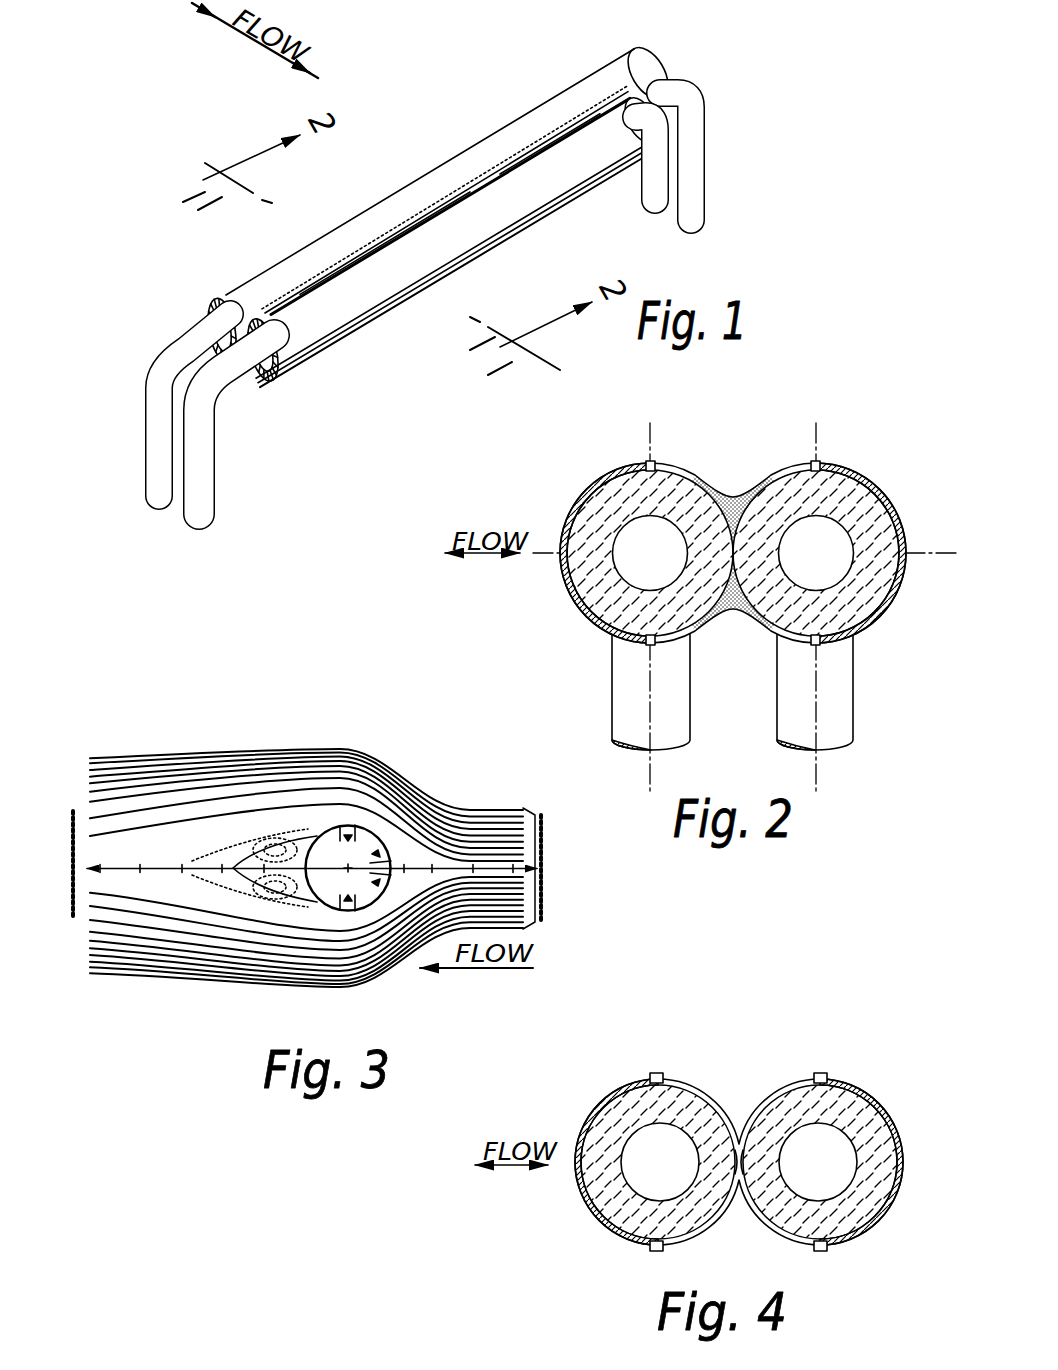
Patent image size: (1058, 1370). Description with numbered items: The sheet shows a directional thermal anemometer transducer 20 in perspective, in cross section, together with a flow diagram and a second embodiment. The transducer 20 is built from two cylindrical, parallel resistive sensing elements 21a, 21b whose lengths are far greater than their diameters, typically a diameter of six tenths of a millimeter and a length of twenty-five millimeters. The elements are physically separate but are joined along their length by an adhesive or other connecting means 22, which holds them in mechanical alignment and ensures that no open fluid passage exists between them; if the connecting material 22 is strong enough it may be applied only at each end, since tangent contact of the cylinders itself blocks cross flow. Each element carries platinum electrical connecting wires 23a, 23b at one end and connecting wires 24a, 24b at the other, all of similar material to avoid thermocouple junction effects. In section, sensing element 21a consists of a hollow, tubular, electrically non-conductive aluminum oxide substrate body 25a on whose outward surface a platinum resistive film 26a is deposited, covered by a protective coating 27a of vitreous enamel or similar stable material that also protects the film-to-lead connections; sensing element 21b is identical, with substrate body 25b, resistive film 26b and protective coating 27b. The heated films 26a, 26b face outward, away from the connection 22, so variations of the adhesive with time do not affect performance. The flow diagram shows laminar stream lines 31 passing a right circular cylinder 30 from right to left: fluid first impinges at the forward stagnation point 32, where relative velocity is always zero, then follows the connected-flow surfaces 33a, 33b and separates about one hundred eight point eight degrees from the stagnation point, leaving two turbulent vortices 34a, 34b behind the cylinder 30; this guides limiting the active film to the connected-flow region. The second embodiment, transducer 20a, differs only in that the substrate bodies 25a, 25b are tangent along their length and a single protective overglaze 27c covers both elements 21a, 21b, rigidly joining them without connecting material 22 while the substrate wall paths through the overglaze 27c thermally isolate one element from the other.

In FIG. 1, the directional thermal anemometer transducer 20 is at (433, 307).
In FIG. 2, the directional thermal anemometer transducer 20 is at (712, 576).
In FIG. 4, the directional thermal anemometer transducer 20a is at (705, 1160).
In FIG. 1, the sensing element 21a is at (240, 281).
In FIG. 2, the sensing element 21a is at (619, 527).
In FIG. 4, the sensing element 21a is at (627, 1160).
In FIG. 1, the sensing element 21b is at (292, 380).
In FIG. 2, the sensing element 21b is at (844, 529).
In FIG. 4, the sensing element 21b is at (840, 1160).
In FIG. 1, the connecting means 22 is at (521, 149).
In FIG. 2, the connecting means 22 is at (733, 494).
In FIG. 1, the electrical connecting wire 23a is at (155, 492).
In FIG. 1, the electrical connecting wire 23b is at (198, 530).
In FIG. 1, the electrical connecting wire 24a is at (655, 205).
In FIG. 2, the electrical connecting wire 24a is at (632, 720).
In FIG. 1, the electrical connecting wire 24b is at (691, 218).
In FIG. 2, the electrical connecting wire 24b is at (835, 727).
In FIG. 2, the substrate body 25a is at (600, 619).
In FIG. 4, the substrate body 25a is at (625, 1222).
In FIG. 2, the substrate body 25b is at (875, 613).
In FIG. 4, the substrate body 25b is at (840, 1228).
In FIG. 2, the resistive film 26a is at (572, 516).
In FIG. 4, the resistive film 26a is at (588, 1112).
In FIG. 2, the resistive film 26b is at (889, 518).
In FIG. 4, the resistive film 26b is at (857, 1078).
In FIG. 2, the protective coating 27a is at (672, 470).
In FIG. 2, the protective coating 27b is at (795, 470).
In FIG. 4, the protective overglaze 27c is at (700, 1086).
In FIG. 3, the right circular cylinder 30 is at (328, 873).
In FIG. 3, the flow stream lines 31 is at (498, 802).
In FIG. 3, the forward stagnation point 32 is at (393, 864).
In FIG. 3, the cylinder surface 33a is at (348, 835).
In FIG. 3, the cylinder surface 33b is at (350, 901).
In FIG. 3, the turbulent vortex 34a is at (272, 847).
In FIG. 3, the turbulent vortex 34b is at (272, 889).